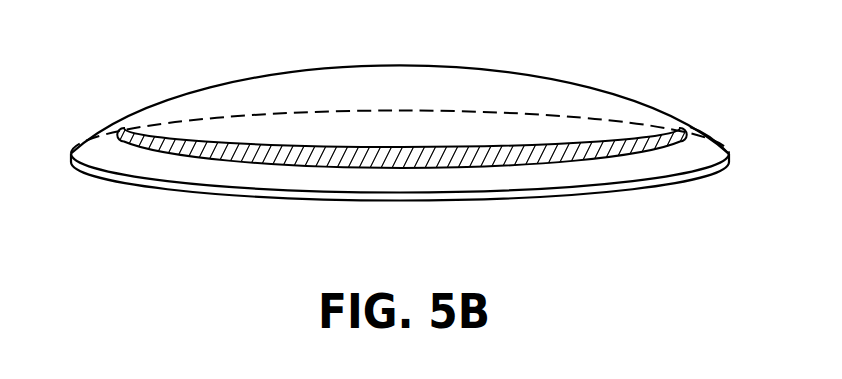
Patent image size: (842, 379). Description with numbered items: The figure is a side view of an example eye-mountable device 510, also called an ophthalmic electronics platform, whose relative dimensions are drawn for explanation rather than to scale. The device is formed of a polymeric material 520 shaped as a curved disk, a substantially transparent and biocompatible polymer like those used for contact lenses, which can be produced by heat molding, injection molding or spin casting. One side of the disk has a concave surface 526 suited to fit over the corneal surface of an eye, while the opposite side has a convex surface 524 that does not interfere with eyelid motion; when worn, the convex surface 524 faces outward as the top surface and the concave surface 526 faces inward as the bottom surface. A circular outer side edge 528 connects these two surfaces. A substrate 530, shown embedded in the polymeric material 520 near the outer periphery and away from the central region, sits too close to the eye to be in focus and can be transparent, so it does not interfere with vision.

The eye-mountable device 510 is at (161, 64).
The polymeric material 520 is at (153, 198).
The convex surface 524 is at (703, 131).
The concave surface 526 is at (652, 188).
The circular outer side edge 528 is at (550, 190).
The substrate 530 is at (118, 129).